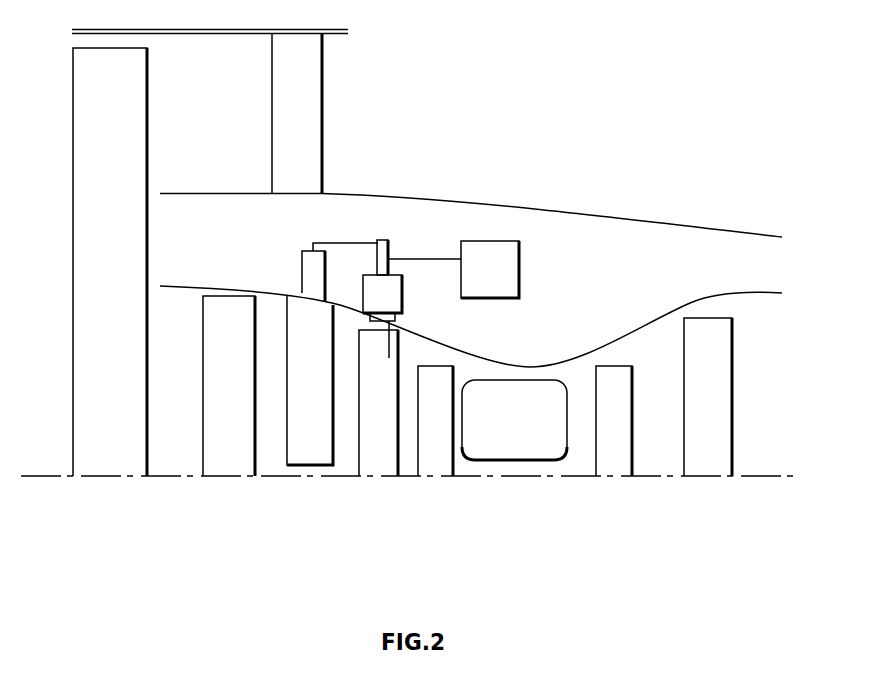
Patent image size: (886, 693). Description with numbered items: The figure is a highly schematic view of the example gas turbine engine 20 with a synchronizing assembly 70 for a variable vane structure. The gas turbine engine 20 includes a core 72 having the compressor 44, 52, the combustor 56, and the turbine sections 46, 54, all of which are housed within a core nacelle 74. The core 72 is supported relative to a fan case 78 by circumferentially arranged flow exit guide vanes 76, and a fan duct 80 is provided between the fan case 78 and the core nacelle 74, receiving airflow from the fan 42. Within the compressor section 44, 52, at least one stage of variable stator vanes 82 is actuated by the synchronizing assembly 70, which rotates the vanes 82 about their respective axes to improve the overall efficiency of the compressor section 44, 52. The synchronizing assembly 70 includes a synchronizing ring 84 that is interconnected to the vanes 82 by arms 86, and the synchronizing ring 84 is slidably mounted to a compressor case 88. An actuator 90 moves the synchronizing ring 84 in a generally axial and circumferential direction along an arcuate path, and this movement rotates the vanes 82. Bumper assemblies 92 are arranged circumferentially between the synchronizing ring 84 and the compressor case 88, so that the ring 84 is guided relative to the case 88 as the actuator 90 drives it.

The gas turbine engine 20 is at (438, 110).
The fan 42 is at (73, 186).
The compressor 44 is at (324, 414).
The compressor 52 is at (453, 490).
The turbine section 46 is at (672, 425).
The turbine section 54 is at (752, 490).
The combustor 56 is at (570, 490).
The synchronizing assembly 70 is at (407, 209).
The core 72 is at (608, 208).
The core nacelle 74 is at (493, 203).
The flow exit guide vanes 76 is at (303, 122).
The fan case 78 is at (217, 33).
The fan duct 80 is at (218, 164).
The variable stator vanes 82 is at (298, 322).
The synchronizing ring 84 is at (394, 298).
The arms 86 is at (340, 243).
The compressor case 88 is at (403, 338).
The actuator 90 is at (507, 278).
The bumper assemblies 92 is at (389, 358).